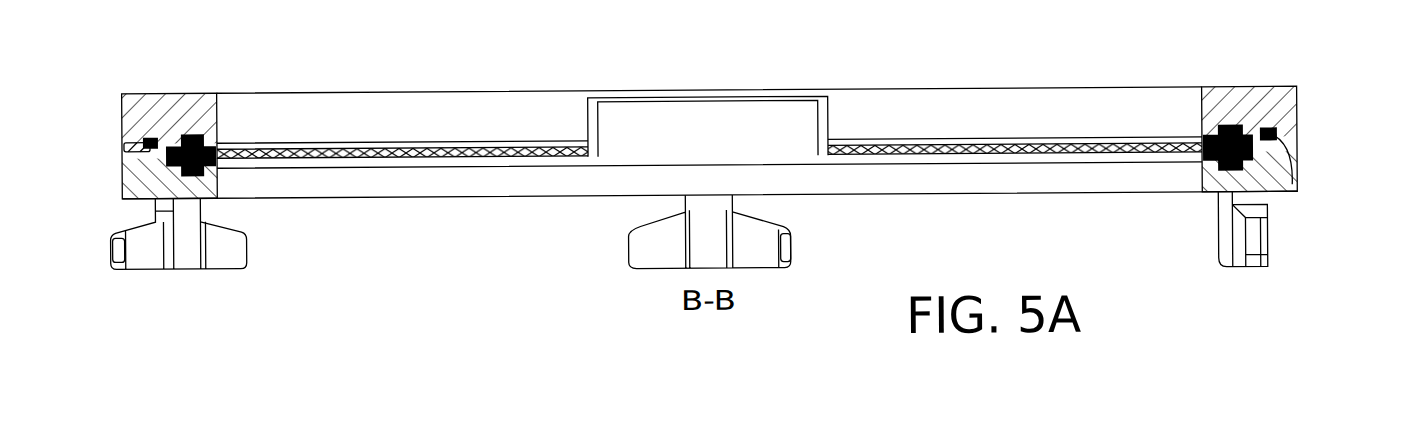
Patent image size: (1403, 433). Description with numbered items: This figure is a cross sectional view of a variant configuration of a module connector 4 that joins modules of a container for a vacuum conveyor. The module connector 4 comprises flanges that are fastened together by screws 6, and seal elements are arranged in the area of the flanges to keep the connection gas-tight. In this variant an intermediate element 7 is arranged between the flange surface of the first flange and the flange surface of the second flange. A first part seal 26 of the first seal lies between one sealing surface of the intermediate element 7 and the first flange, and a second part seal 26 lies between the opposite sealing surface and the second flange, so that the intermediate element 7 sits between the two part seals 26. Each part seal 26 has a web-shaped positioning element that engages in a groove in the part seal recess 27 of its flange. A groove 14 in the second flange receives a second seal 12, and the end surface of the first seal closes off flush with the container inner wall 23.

The module connector 4 is at (1315, 153).
The screw 6 is at (232, 261).
The intermediate element 7 is at (972, 152).
The second seal 12 is at (218, 139).
The groove 14 is at (148, 139).
The container inner wall 23 is at (218, 177).
The part seal 26 is at (1248, 135).
The part seal recess 27 is at (177, 166).